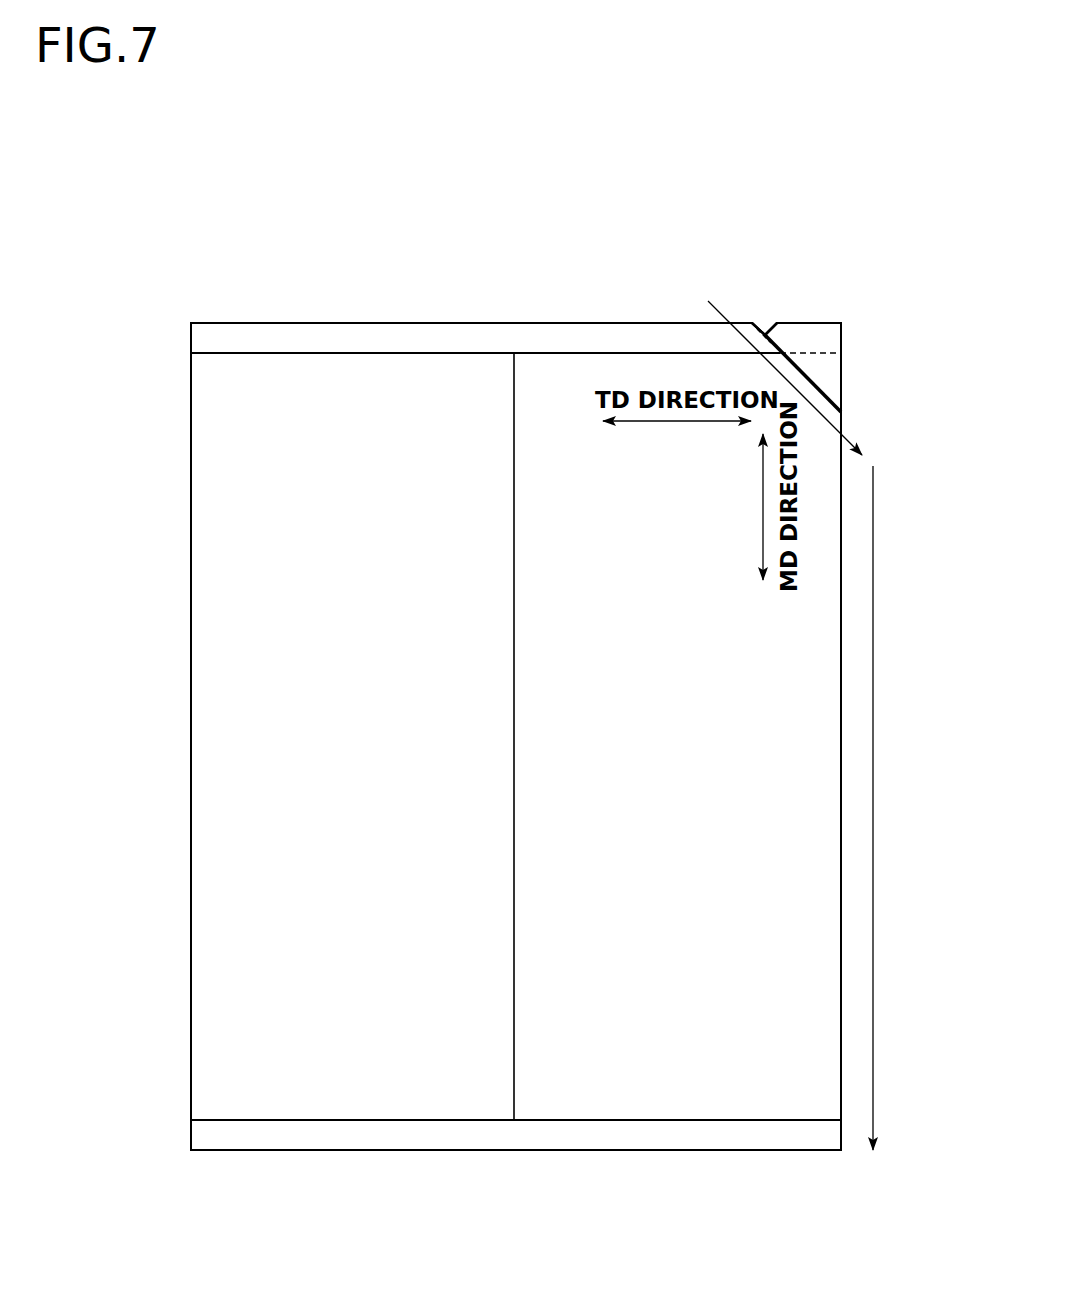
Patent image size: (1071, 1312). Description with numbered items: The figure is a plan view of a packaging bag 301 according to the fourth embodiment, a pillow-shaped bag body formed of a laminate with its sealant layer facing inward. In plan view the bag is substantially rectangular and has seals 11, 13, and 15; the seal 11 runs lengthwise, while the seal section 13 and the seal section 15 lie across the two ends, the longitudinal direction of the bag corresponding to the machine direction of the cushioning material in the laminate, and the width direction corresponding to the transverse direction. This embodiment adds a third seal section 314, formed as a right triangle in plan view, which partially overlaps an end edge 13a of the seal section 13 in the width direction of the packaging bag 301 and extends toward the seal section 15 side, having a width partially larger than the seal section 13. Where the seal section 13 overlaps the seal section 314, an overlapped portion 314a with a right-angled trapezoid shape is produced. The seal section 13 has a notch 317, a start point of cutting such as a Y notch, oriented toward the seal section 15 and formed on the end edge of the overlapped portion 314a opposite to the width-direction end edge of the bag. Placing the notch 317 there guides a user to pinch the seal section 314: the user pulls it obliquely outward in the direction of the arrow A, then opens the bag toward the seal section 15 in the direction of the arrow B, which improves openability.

The packaging bag 301 is at (798, 214).
The seal section 13 is at (370, 340).
The seal section 15 is at (373, 1138).
The seal 11 is at (516, 733).
The notch 317 is at (765, 327).
The end edge 13a is at (829, 333).
The seal section 314 is at (825, 371).
The overlapped portion 314a is at (807, 338).
The arrow A is at (716, 302).
The arrow B is at (876, 520).